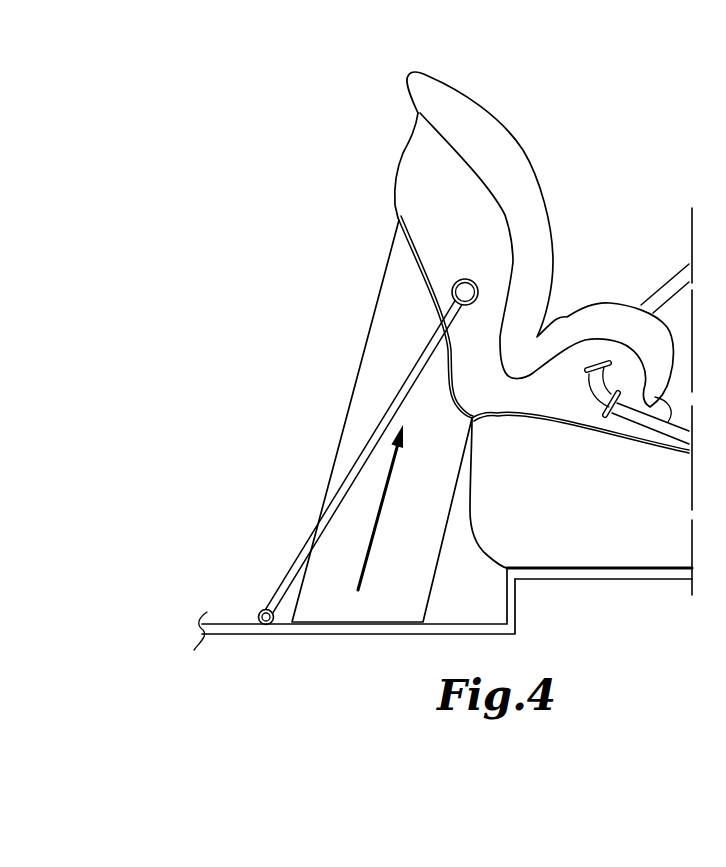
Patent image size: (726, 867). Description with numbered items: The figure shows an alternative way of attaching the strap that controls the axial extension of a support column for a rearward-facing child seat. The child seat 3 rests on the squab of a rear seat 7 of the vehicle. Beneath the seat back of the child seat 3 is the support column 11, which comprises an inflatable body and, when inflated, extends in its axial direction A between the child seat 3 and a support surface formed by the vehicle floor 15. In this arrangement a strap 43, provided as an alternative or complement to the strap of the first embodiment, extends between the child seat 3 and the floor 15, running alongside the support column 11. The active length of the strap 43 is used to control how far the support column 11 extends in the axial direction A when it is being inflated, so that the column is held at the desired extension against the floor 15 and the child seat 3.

The child seat 3 is at (568, 184).
The rear seat 7 is at (596, 492).
The support column 11 is at (342, 348).
The vehicle floor 15 is at (253, 628).
The strap 43 is at (309, 541).
The axial direction A is at (393, 457).